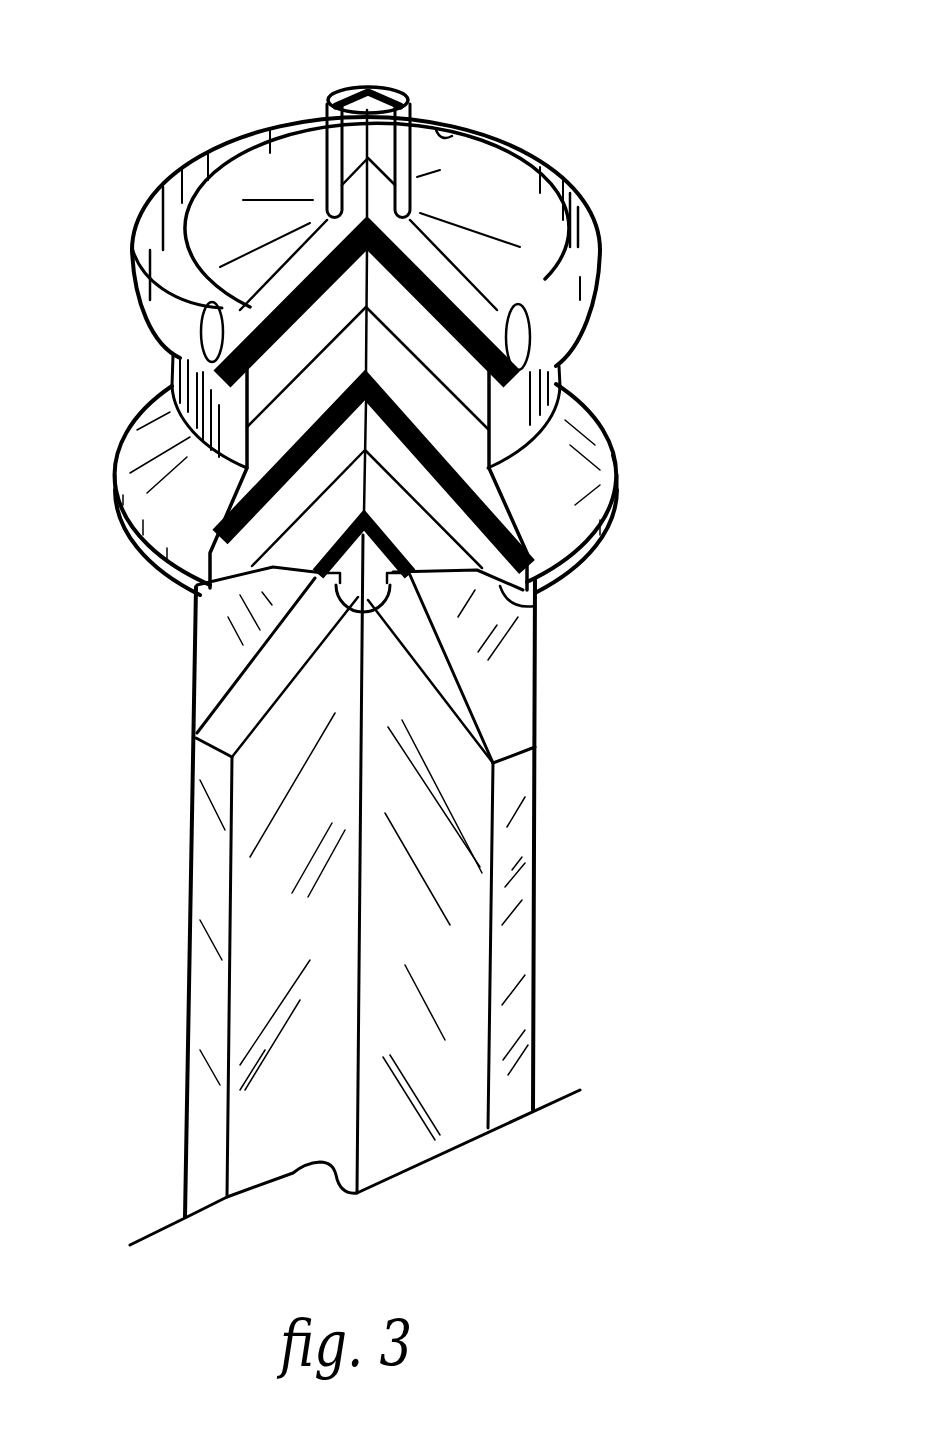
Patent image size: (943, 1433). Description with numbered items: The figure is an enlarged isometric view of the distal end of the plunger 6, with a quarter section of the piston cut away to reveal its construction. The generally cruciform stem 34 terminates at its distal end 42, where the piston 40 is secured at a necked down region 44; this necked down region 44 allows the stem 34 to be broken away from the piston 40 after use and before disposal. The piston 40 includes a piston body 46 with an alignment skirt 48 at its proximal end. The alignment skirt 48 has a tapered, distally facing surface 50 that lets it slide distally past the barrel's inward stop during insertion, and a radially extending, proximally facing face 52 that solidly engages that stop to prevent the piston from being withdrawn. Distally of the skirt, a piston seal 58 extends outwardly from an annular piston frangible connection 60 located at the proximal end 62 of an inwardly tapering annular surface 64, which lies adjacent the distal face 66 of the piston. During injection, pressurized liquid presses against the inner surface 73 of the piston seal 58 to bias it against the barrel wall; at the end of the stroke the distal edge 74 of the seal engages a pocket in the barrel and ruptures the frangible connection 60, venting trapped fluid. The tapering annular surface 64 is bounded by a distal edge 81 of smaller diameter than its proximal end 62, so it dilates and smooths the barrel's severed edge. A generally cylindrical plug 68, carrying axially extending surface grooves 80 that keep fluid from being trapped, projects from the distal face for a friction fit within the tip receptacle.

The plunger 6 is at (618, 756).
The stem 34 is at (542, 673).
The piston 40 is at (562, 372).
The distal end 42 is at (205, 817).
The necked down region 44 is at (318, 585).
The piston body 46 is at (562, 390).
The alignment skirt 48 is at (118, 530).
The tapered, distally facing surface 50 is at (135, 441).
The radially extending, proximally facing face 52 is at (535, 607).
The piston seal 58 is at (598, 254).
The annular piston frangible connection 60 is at (597, 475).
The proximal end 62 is at (232, 352).
The inwardly tapering annular surface 64 is at (235, 318).
The distal face 66 is at (470, 198).
The plug 68 is at (383, 86).
The inner surface 73 is at (452, 128).
The distal edge 74 is at (578, 190).
The surface grooves 80 is at (406, 108).
The distal edge 81 is at (152, 247).